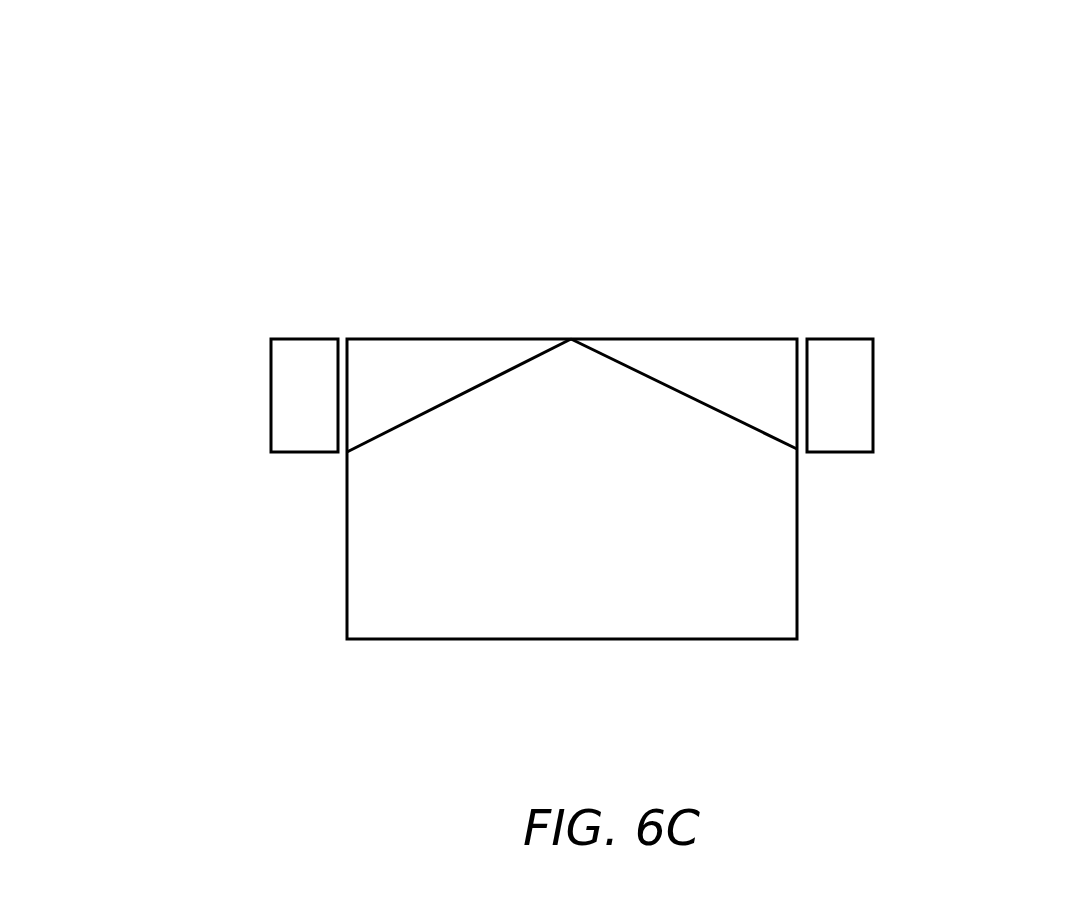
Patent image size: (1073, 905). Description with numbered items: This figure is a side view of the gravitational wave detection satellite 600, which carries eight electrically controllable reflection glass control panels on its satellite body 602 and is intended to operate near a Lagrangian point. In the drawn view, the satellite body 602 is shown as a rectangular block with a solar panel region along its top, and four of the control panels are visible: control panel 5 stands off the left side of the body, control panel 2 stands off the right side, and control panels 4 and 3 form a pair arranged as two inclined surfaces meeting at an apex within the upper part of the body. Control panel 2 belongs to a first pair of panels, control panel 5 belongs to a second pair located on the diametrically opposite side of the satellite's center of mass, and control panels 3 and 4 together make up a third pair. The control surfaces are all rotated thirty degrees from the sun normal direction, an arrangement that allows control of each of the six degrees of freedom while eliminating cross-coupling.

The satellite 600 is at (843, 104).
The satellite body 602 is at (497, 330).
The control panel 5 is at (188, 423).
The control panel 4 is at (817, 535).
The control panel 3 is at (817, 535).
The control panel 2 is at (948, 423).